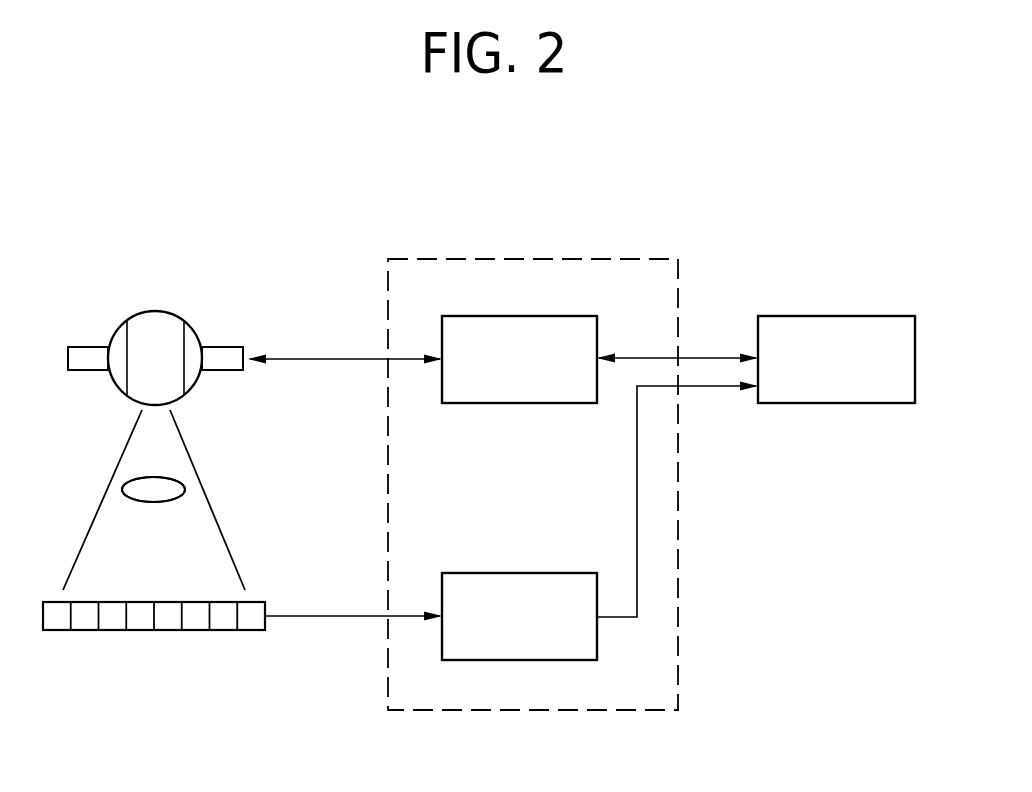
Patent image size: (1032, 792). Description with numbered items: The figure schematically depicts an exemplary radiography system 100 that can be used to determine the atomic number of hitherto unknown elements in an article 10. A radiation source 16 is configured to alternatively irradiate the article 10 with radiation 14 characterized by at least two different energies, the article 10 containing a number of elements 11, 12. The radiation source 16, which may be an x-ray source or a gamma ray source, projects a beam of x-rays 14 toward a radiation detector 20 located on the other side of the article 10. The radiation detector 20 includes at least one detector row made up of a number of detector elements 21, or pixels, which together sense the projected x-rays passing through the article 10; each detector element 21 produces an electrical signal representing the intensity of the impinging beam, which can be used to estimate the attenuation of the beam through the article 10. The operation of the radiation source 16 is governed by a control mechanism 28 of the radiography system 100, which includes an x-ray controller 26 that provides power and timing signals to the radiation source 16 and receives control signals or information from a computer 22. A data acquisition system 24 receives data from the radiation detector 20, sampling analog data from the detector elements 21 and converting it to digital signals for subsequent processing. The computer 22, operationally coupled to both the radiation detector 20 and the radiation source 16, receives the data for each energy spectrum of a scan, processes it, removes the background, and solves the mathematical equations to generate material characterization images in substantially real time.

The radiography system 100 is at (692, 168).
The radiation source 16 is at (155, 312).
The radiation 14 is at (112, 472).
The article 10 is at (186, 490).
The element 11 is at (153, 495).
The element 12 is at (166, 523).
The radiation detector 20 is at (248, 685).
The detector elements 21 is at (85, 630).
The control mechanism 28 is at (678, 637).
The x-ray controller 26 is at (512, 316).
The data acquisition system (DAS) 24 is at (512, 573).
The computer 22 is at (885, 316).